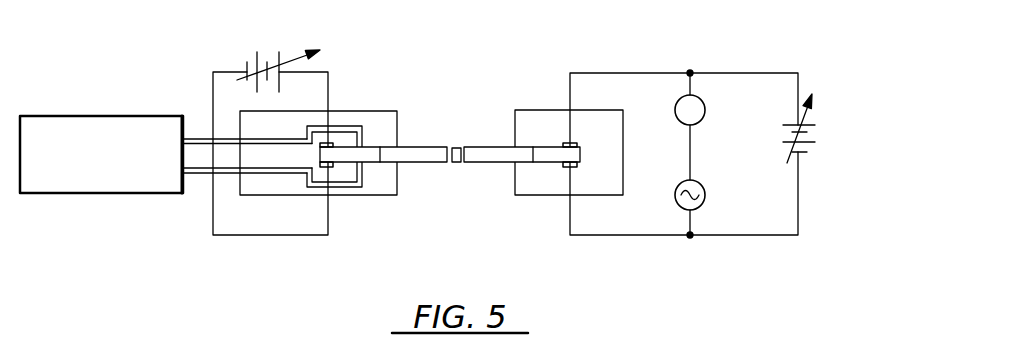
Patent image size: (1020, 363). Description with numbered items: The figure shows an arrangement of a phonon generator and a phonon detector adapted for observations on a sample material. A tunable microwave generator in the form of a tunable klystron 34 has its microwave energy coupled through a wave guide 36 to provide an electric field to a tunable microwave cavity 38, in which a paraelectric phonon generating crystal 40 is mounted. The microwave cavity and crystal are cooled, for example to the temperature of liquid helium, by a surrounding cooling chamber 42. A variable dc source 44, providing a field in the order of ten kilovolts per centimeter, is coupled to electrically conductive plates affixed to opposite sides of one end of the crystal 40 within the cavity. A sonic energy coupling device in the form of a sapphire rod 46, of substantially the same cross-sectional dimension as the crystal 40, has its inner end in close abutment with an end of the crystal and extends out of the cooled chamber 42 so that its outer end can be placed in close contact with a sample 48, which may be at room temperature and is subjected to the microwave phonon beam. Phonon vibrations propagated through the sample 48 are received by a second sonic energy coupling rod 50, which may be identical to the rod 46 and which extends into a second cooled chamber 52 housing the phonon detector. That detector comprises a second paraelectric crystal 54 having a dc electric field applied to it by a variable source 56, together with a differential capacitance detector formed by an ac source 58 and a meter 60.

The tunable klystron 34 is at (110, 194).
The wave guide 36 is at (203, 174).
The tunable microwave cavity 38 is at (358, 126).
The paraelectric phonon generating crystal 40 is at (343, 164).
The cooling chamber 42 is at (343, 110).
The variable dc source 44 is at (289, 56).
The sapphire rod 46 is at (428, 163).
The sample 48 is at (456, 147).
The second sonic energy coupling rod 50 is at (497, 163).
The second cooled chamber 52 is at (550, 196).
The second paraelectric crystal 54 is at (545, 145).
The variable source 56 is at (812, 143).
The ac source 58 is at (707, 195).
The meter 60 is at (706, 112).